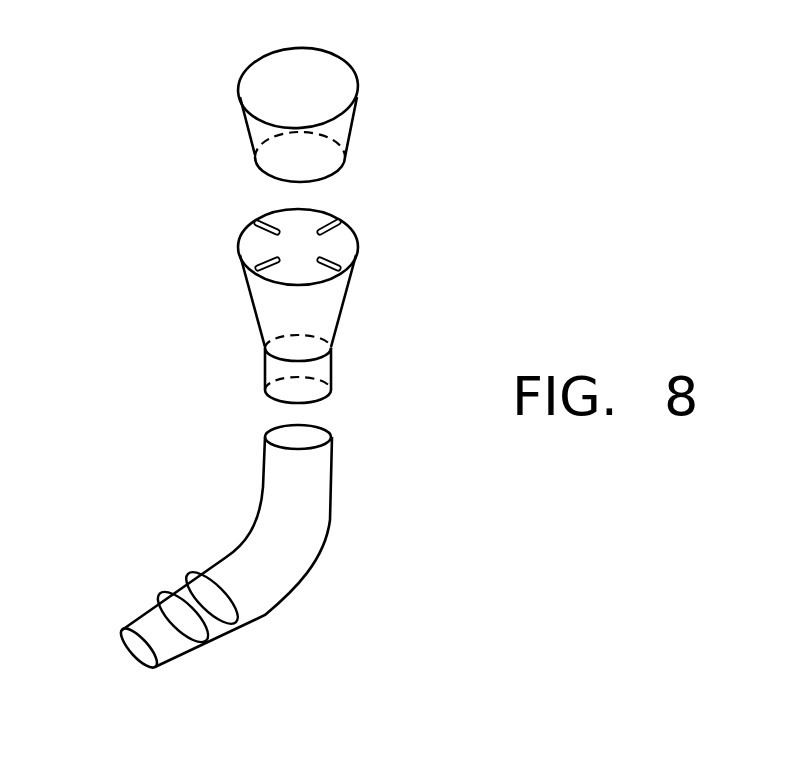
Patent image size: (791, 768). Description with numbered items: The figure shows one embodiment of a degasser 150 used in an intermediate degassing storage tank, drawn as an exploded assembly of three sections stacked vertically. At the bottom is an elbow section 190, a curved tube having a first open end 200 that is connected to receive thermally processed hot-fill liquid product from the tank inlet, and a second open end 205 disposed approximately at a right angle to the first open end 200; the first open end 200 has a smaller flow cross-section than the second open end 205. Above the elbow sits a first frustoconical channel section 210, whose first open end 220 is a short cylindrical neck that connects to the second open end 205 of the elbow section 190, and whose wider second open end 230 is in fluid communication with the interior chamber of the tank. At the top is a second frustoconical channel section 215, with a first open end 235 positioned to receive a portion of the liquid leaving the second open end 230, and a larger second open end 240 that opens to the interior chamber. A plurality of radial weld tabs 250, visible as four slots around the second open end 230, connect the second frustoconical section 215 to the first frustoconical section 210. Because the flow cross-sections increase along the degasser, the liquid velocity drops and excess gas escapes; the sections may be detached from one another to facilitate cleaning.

The degasser 150 is at (186, 316).
The elbow section 190 is at (321, 535).
The first open end 200 is at (133, 652).
The second open end 205 is at (330, 437).
The first frustoconical channel section 210 is at (356, 290).
The second frustoconical channel section 215 is at (358, 124).
The first open end 220 is at (322, 396).
The second open end 230 is at (352, 235).
The first open end 235 is at (330, 172).
The second open end 240 is at (322, 63).
The radial weld tabs 250 is at (257, 224).